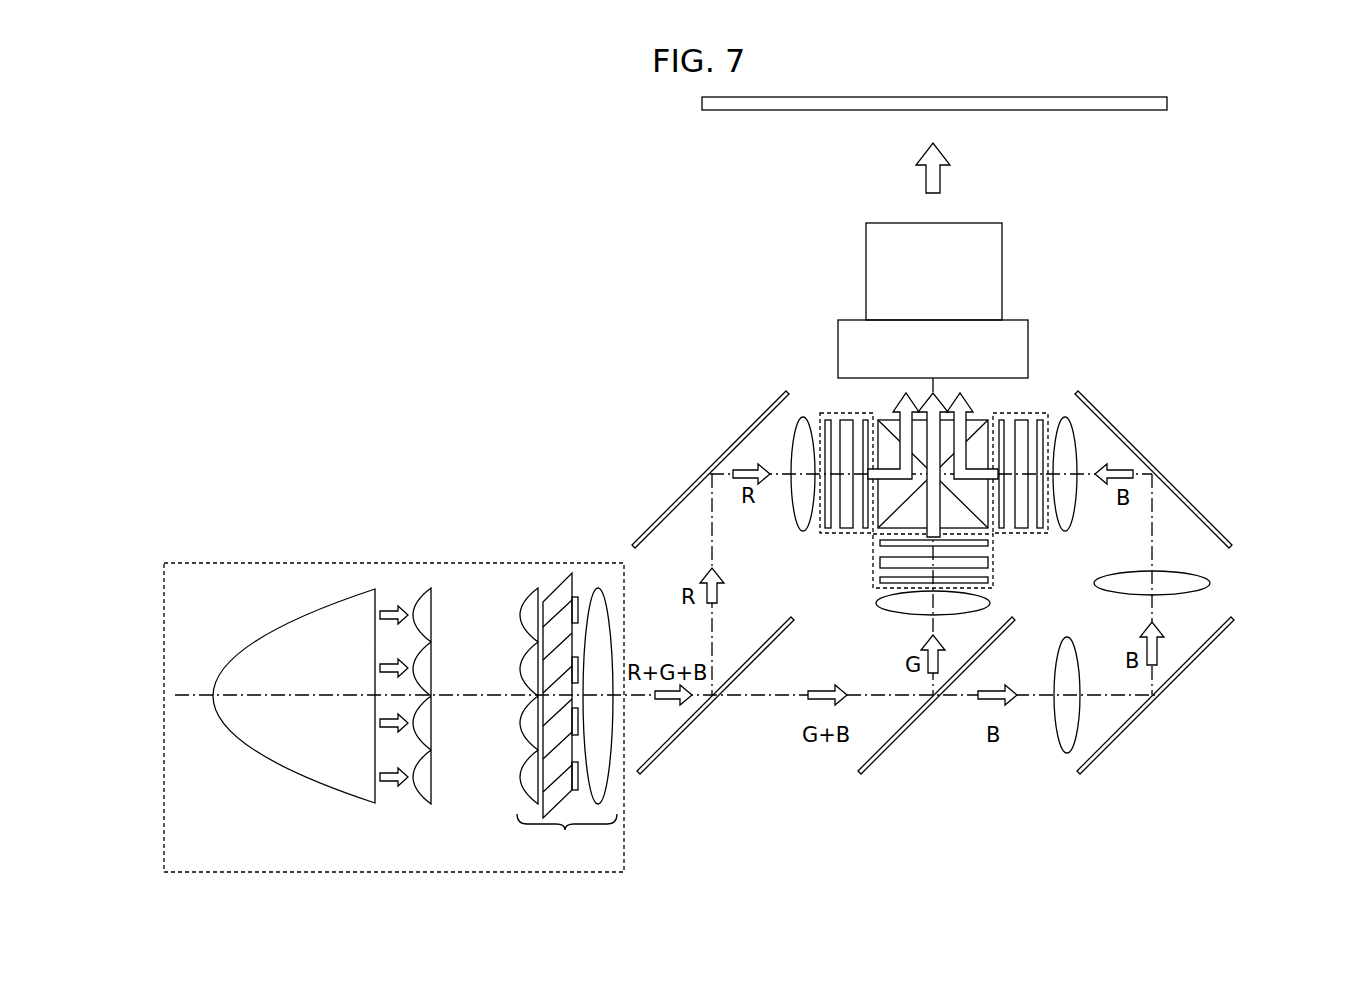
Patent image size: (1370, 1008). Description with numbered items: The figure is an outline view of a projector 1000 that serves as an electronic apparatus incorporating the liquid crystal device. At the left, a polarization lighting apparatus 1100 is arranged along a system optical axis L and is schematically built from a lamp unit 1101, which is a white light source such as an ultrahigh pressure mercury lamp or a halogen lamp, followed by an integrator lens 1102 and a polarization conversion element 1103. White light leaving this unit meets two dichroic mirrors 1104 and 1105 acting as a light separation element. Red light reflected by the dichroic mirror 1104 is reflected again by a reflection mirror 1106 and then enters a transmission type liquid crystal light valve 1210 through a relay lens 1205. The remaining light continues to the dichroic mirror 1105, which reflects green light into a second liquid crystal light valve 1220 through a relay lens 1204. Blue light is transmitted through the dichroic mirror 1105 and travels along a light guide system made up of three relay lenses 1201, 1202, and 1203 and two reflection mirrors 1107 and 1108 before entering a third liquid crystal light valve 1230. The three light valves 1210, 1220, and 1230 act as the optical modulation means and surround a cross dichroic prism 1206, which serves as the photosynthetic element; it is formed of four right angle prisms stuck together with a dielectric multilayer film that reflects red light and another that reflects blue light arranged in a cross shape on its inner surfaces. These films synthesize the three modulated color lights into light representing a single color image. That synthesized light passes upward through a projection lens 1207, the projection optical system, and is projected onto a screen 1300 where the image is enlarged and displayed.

The projector 1000 is at (1277, 191).
The polarization lighting apparatus 1100 is at (415, 562).
The lamp unit 1101 is at (289, 787).
The integrator lens 1102 is at (422, 806).
The polarization conversion element 1103 is at (567, 715).
The dichroic mirror 1104 is at (678, 741).
The dichroic mirror 1105 is at (898, 741).
The reflection mirror 1106 is at (707, 470).
The reflection mirror 1107 is at (1114, 741).
The reflection mirror 1108 is at (1154, 466).
The relay lens 1201 is at (1067, 755).
The relay lens 1202 is at (1210, 583).
The relay lens 1203 is at (1065, 531).
The relay lens 1204 is at (880, 604).
The relay lens 1205 is at (803, 531).
The cross dichroic prism 1206 is at (986, 420).
The projection lens 1207 is at (993, 270).
The liquid crystal light valve 1210 is at (838, 413).
The liquid crystal light valve 1220 is at (993, 580).
The liquid crystal light valve 1230 is at (1035, 413).
The screen 1300 is at (1090, 112).
The system optical axis L is at (195, 694).